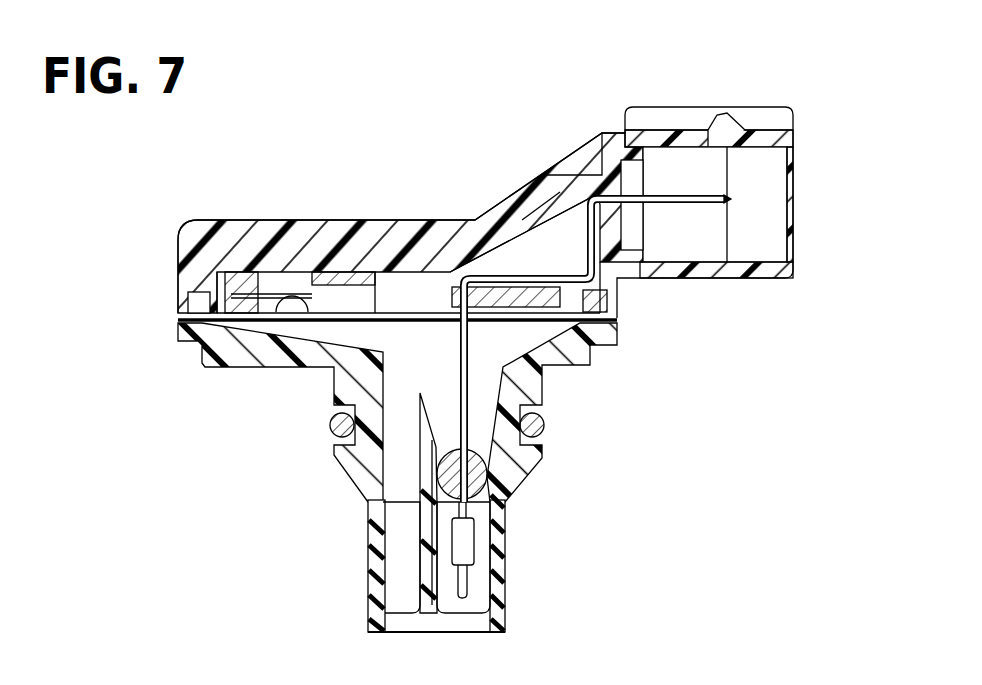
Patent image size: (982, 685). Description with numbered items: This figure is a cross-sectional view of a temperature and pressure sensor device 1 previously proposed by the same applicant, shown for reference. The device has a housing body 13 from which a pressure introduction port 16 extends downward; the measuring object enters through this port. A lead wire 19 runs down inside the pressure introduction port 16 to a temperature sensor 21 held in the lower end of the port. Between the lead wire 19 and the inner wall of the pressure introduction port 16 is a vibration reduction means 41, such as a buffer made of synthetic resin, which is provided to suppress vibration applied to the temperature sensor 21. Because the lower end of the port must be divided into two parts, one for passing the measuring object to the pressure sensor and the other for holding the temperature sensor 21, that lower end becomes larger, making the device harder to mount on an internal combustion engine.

The pressure sensor 1 is at (763, 90).
The housing 13 is at (342, 396).
The pressure introduction port 16 is at (358, 480).
The lead wire 19 is at (470, 389).
The temperature sensor 21 is at (477, 558).
The vibration reduction means 41 is at (487, 477).